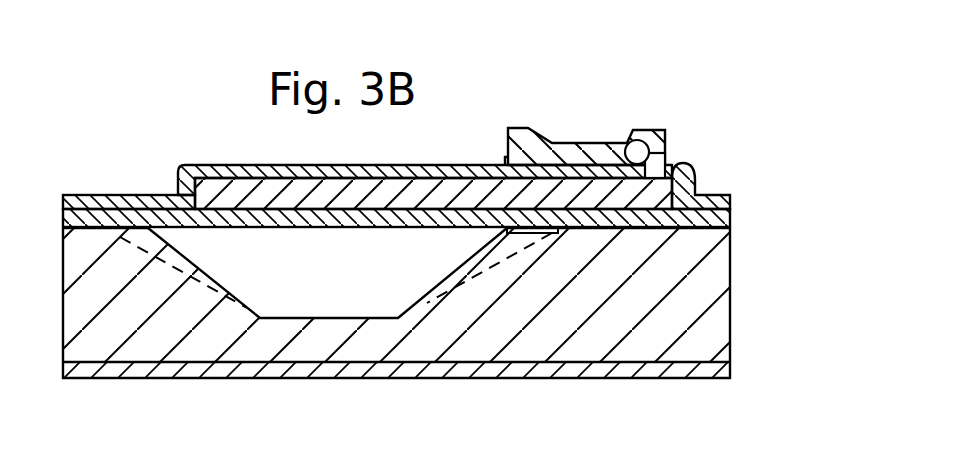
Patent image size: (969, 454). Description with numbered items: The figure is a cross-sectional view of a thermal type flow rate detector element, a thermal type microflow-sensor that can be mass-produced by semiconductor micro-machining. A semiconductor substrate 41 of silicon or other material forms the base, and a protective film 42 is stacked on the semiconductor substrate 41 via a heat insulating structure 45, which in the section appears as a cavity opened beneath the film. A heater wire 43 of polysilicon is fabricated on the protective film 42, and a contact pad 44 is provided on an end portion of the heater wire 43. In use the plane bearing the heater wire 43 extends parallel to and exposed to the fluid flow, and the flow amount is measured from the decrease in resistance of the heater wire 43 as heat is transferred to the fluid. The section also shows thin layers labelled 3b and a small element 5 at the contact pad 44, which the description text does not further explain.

The electrode 3b is at (110, 195).
The contact bump 5 is at (665, 135).
The semiconductor substrate 41 is at (712, 334).
The protective film 42 is at (650, 222).
The heater wire 43 is at (690, 195).
The contact pad 44 is at (600, 143).
The heat insulating structure 45 is at (352, 288).